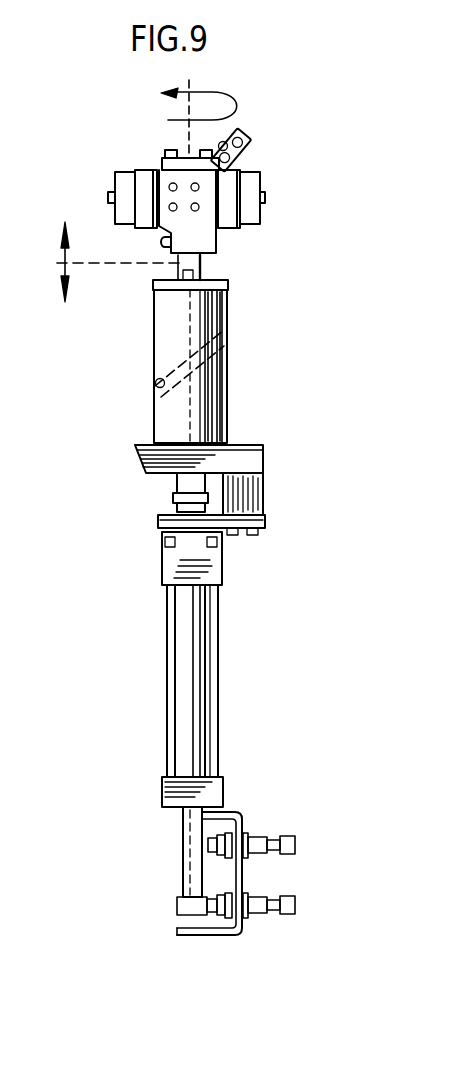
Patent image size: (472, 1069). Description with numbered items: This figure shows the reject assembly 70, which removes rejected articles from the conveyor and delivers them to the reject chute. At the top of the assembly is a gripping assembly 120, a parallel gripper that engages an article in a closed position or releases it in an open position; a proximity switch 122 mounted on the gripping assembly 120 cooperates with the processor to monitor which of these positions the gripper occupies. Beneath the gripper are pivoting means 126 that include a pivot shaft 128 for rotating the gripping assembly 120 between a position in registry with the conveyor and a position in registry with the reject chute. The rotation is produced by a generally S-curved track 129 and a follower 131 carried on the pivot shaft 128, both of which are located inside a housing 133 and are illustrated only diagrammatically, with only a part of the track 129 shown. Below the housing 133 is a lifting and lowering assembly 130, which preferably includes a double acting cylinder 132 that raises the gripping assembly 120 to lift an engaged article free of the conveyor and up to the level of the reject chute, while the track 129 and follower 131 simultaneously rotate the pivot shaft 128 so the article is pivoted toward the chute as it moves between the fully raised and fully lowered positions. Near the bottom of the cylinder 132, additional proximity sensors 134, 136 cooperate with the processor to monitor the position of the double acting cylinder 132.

The reject assembly 70 is at (127, 509).
The gripping assembly 120 is at (106, 175).
The proximity switch 122 is at (247, 130).
The pivoting means 126 is at (128, 370).
The pivot shaft 128 is at (200, 260).
The S-curved track 129 is at (225, 363).
The lifting and lowering assembly 130 is at (137, 692).
The follower 131 is at (157, 386).
The double acting cylinder 132 is at (195, 720).
The housing 133 is at (165, 340).
The proximity sensor 134 is at (285, 836).
The proximity sensor 136 is at (285, 918).